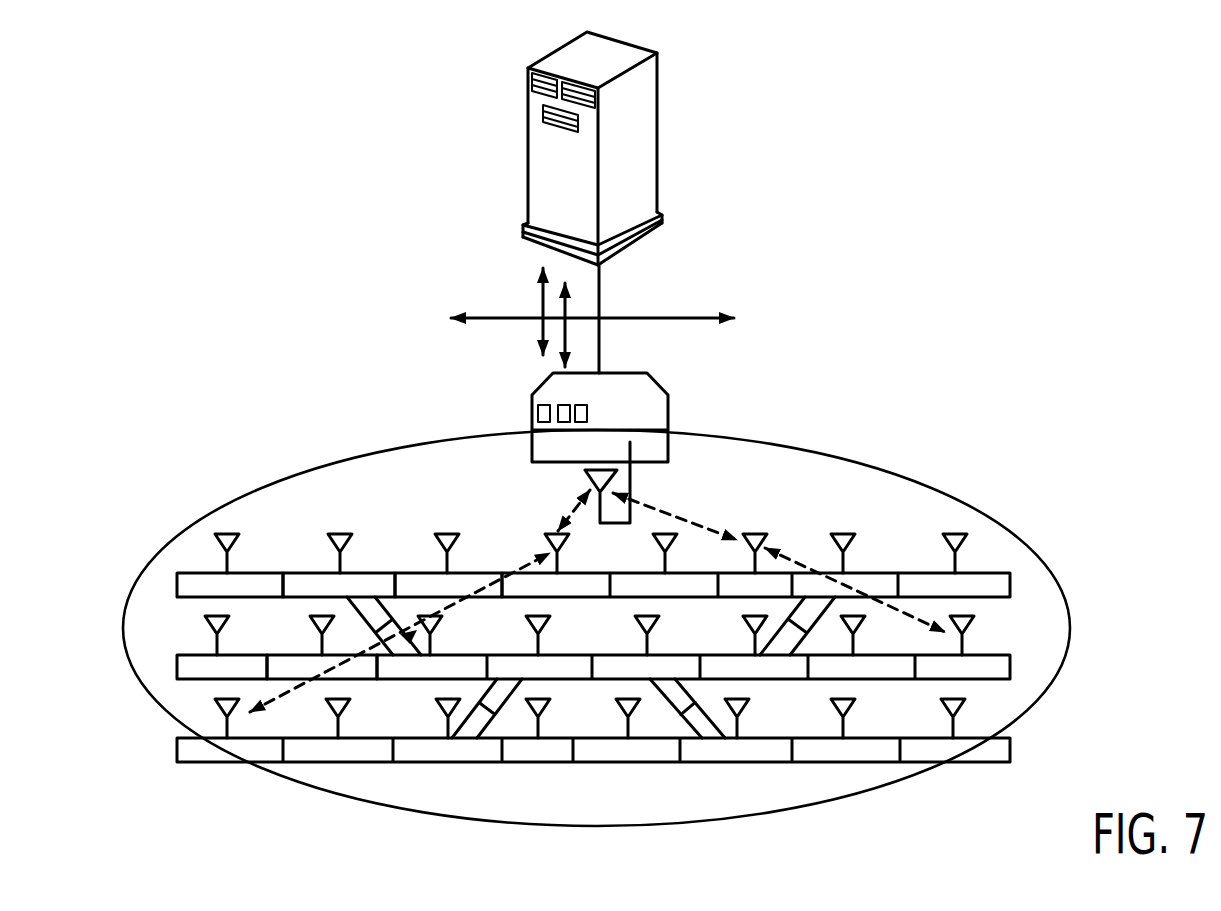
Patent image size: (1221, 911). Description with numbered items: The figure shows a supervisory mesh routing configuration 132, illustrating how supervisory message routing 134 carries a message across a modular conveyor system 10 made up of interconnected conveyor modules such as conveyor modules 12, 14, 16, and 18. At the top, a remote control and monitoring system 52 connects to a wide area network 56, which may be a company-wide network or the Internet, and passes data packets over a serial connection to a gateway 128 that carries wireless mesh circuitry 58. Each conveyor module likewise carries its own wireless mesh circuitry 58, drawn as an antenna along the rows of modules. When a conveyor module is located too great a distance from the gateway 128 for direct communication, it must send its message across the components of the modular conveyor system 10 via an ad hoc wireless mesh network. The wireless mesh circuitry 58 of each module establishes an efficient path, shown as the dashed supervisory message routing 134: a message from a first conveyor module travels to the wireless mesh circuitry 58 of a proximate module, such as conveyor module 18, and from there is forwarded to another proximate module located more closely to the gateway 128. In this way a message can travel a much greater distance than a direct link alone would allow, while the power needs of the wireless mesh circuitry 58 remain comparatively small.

The modular conveyor system 10 is at (124, 793).
The conveyor module 12 is at (302, 572).
The conveyor module 14 is at (422, 572).
The conveyor module 16 is at (337, 680).
The conveyor module 18 is at (432, 682).
The remote control and monitoring system 52 is at (658, 128).
The wide area network 56 is at (645, 317).
The wireless mesh circuitry 58 is at (221, 534).
The gateway 128 is at (632, 372).
The supervisory mesh routing configuration 132 is at (209, 400).
The supervisory message routing 134 is at (573, 503).